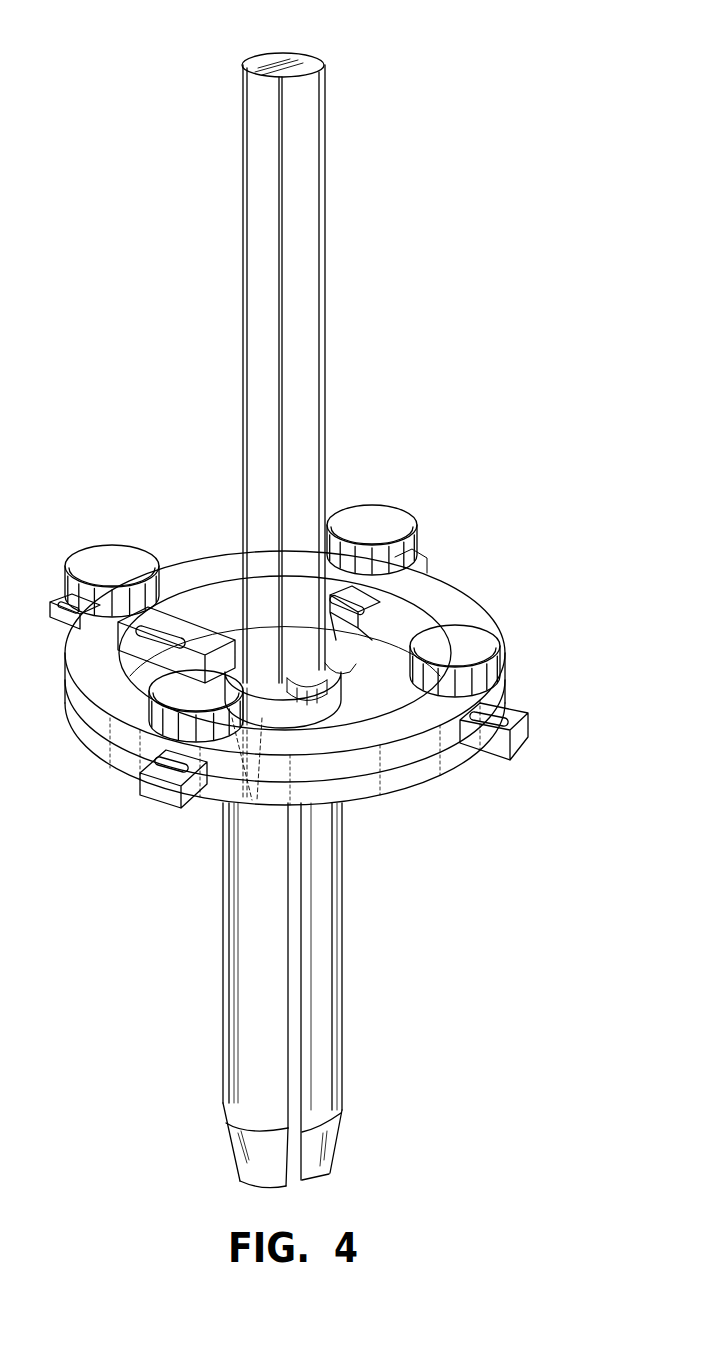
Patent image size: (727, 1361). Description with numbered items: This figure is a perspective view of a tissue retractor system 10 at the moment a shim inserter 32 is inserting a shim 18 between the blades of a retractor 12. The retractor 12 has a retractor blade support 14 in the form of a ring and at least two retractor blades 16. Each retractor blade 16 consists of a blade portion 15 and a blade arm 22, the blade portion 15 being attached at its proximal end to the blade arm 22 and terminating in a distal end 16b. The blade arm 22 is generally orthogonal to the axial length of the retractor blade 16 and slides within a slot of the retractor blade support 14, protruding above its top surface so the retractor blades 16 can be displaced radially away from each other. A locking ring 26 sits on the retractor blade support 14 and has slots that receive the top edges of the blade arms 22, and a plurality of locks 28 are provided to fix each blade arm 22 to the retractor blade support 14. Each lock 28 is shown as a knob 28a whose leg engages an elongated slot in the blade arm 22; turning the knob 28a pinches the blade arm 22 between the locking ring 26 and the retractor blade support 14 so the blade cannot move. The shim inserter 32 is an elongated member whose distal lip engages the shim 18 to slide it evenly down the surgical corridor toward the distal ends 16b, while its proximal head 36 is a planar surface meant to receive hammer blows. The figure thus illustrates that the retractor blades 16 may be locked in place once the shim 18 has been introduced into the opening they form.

The retractor system 10 is at (424, 147).
The retractor 12 is at (203, 950).
The retractor blade support 14 is at (423, 760).
The blade portion 15 is at (260, 1012).
The retractor blade 16 is at (205, 1093).
The distal end 16b is at (342, 1150).
The shim 18 is at (214, 1153).
The blade arm 22 is at (167, 790).
The locking ring 26 is at (396, 748).
The lock 28 is at (463, 626).
The knob 28a is at (465, 648).
The shim inserter 32 is at (320, 118).
The head 36 is at (313, 62).